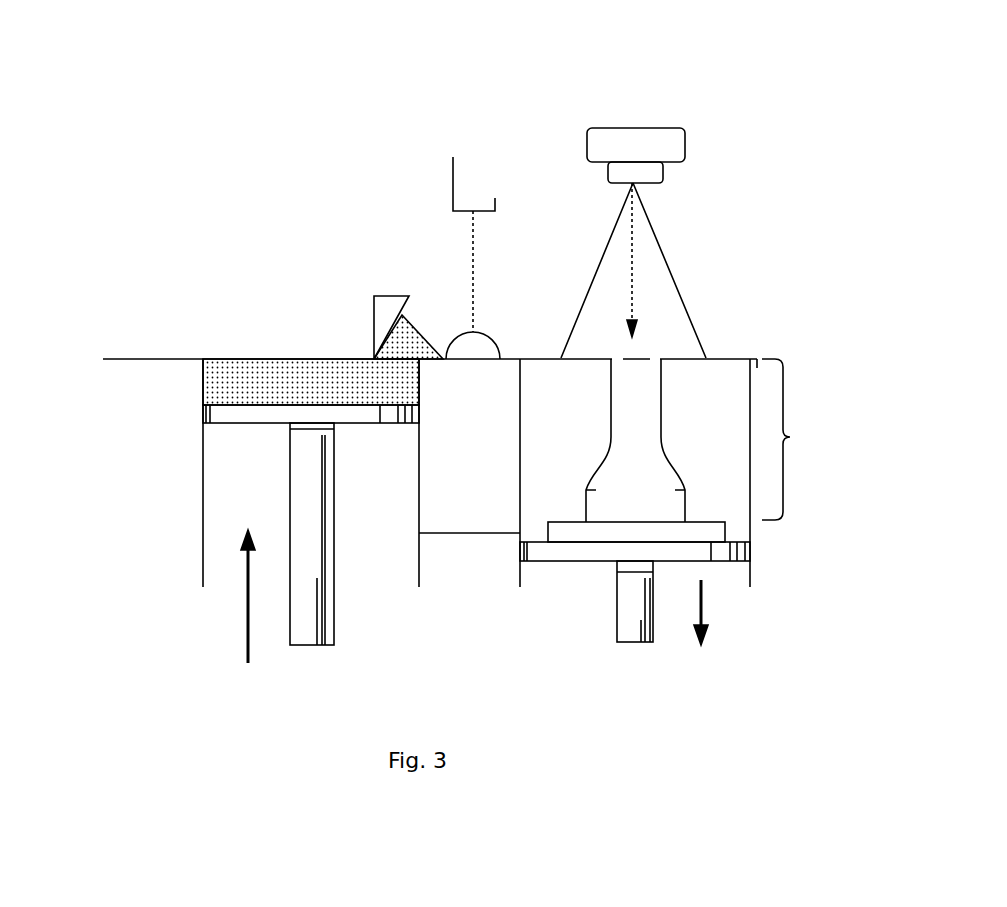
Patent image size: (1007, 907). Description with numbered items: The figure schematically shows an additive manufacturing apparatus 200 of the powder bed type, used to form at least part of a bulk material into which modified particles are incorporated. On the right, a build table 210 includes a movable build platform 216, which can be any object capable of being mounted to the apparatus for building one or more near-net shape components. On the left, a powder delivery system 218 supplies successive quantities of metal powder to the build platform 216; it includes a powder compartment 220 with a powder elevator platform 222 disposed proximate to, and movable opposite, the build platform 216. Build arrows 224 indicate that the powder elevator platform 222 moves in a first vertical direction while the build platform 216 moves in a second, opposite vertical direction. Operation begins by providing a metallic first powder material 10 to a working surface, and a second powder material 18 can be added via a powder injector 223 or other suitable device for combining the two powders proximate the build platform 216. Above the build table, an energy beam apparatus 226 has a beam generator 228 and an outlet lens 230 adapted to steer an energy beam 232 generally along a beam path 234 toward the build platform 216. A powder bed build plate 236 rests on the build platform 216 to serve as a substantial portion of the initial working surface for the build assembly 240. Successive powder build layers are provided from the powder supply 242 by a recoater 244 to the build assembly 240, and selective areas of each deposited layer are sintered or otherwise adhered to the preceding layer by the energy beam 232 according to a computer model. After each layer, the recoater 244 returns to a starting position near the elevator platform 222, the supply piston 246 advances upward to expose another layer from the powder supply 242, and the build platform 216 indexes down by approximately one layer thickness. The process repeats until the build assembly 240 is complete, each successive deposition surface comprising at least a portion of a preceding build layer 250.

The first powder material 10 is at (320, 395).
The second powder material 18 is at (473, 242).
The additive manufacturing apparatus 200 is at (160, 241).
The build table 210 is at (679, 450).
The movable build platform 216 is at (725, 580).
The powder delivery system 218 is at (282, 421).
The powder compartment 220 is at (202, 380).
The powder elevator platform 222 is at (388, 424).
The powder injector 223 is at (453, 212).
The build arrows 224 is at (243, 615).
The energy beam apparatus 226 is at (639, 186).
The beam generator 228 is at (633, 140).
The outlet lens 230 is at (620, 175).
The energy beam 232 is at (630, 290).
The beam path 234 is at (668, 250).
The powder bed build plate 236 is at (725, 532).
The build assembly 240 is at (800, 439).
The powder supply 242 is at (156, 349).
The recoater 244 is at (392, 297).
The supply piston 246 is at (310, 561).
The preceding build layer 250 is at (657, 350).